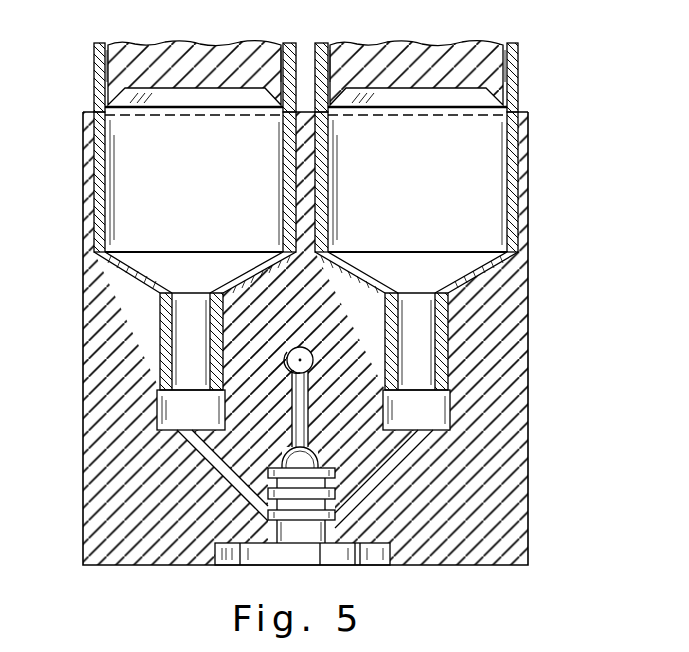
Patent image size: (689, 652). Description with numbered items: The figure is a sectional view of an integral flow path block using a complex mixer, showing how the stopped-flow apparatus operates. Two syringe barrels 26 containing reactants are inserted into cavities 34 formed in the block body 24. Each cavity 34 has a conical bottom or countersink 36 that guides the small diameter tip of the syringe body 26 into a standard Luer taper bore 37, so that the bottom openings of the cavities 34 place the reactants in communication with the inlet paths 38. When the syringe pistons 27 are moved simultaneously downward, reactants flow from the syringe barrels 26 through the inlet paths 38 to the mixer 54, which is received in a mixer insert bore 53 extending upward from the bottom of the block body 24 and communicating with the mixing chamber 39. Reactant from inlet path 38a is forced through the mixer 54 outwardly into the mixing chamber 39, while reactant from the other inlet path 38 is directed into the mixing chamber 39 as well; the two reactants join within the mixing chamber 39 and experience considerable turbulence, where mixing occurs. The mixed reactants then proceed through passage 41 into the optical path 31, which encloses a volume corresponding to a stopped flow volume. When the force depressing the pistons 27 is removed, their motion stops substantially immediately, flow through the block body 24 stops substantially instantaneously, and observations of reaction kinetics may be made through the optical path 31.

The block body 24 is at (520, 110).
The syringe barrel 26 is at (94, 70).
The syringe piston 27 is at (152, 60).
The optical path 31 is at (305, 350).
The cavity 34 is at (96, 185).
The conical bottom or countersink 36 is at (110, 268).
The Luer taper bore 37 is at (165, 356).
The inlet path 38 is at (366, 450).
The inlet path 38a is at (229, 445).
The mixing chamber 39 is at (308, 415).
The passage 41 is at (290, 358).
The mixer insert bore 53 is at (328, 565).
The mixer 54 is at (292, 566).